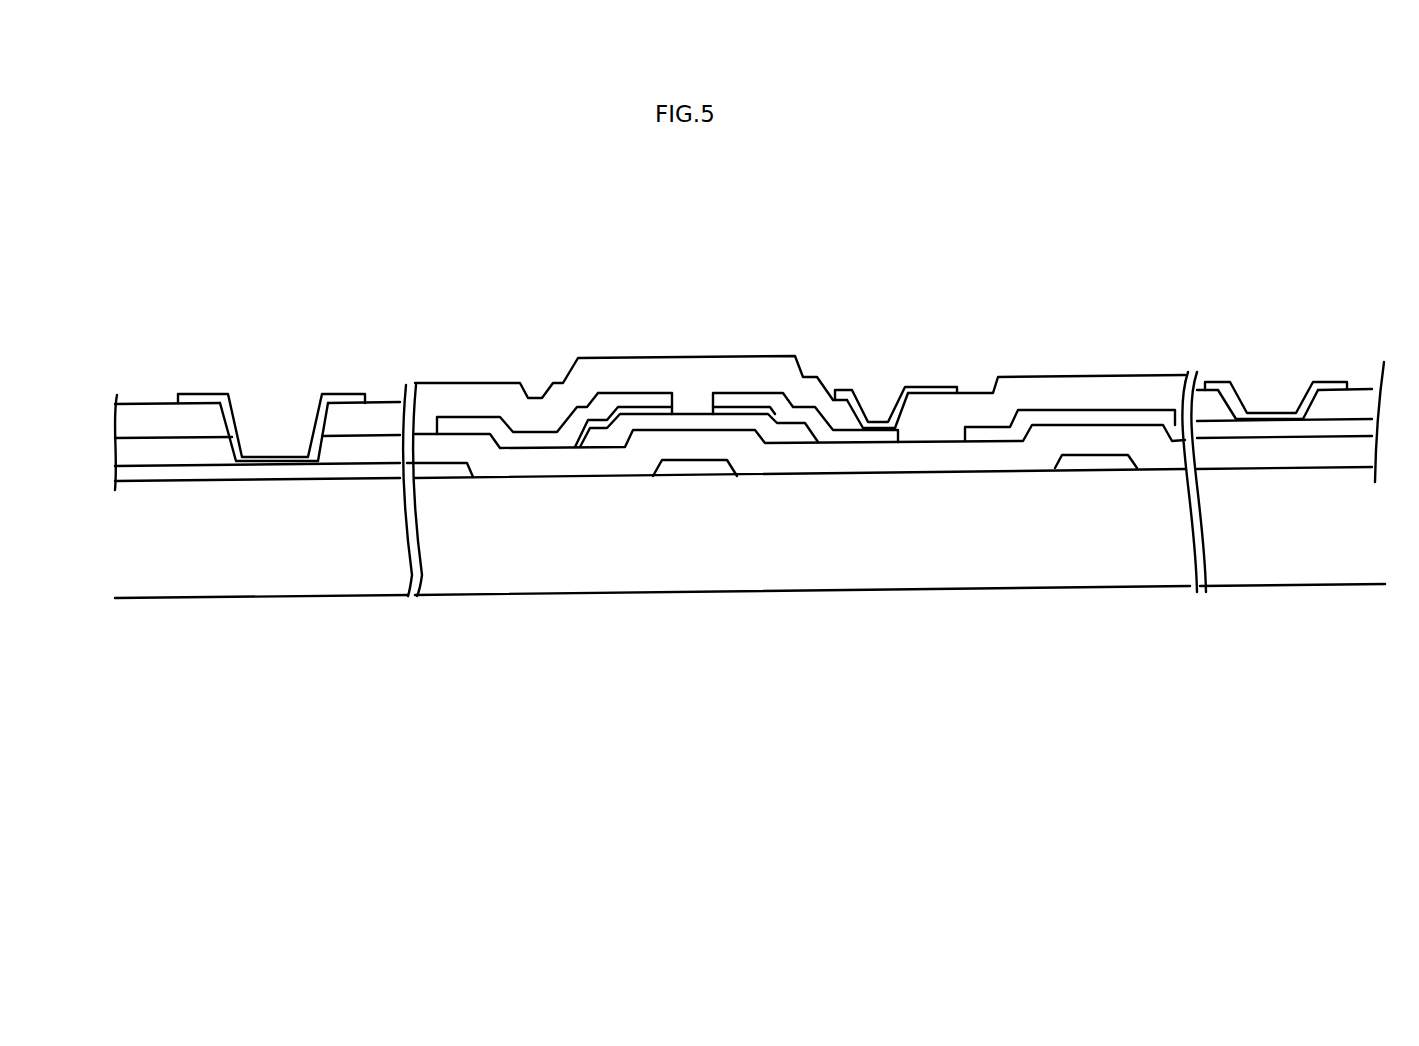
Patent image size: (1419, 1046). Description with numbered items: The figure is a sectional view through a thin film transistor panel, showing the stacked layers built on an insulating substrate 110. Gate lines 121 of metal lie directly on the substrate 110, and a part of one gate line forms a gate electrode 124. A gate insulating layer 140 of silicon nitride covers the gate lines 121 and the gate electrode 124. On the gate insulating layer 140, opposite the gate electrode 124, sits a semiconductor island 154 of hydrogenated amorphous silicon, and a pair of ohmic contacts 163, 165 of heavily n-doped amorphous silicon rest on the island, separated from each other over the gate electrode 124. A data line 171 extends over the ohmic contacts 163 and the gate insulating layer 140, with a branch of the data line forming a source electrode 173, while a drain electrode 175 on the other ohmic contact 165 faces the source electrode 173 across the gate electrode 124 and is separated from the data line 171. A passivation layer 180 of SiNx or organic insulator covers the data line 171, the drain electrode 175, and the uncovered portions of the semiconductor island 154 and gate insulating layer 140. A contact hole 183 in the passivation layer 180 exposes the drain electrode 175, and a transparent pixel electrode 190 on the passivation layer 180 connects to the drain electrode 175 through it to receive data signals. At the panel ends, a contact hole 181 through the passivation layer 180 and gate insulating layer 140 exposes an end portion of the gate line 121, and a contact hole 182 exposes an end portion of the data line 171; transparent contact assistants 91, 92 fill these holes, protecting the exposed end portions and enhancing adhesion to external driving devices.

The insulating substrate 110 is at (985, 570).
The gate line 121 is at (243, 473).
The gate electrode 124 is at (715, 463).
The gate insulating layer 140 is at (168, 452).
The semiconductor island 154 is at (620, 440).
The ohmic contact 163 is at (585, 425).
The ohmic contact 165 is at (793, 425).
The data line 171 is at (465, 417).
The source electrode 173 is at (655, 393).
The drain electrode 175 is at (745, 393).
The passivation layer 180 is at (148, 412).
The contact hole 181 is at (270, 383).
The contact hole 182 is at (1268, 355).
The contact hole 183 is at (870, 360).
The pixel electrode 190 is at (938, 387).
The contact assistant 91 is at (353, 393).
The contact assistant 92 is at (1330, 381).